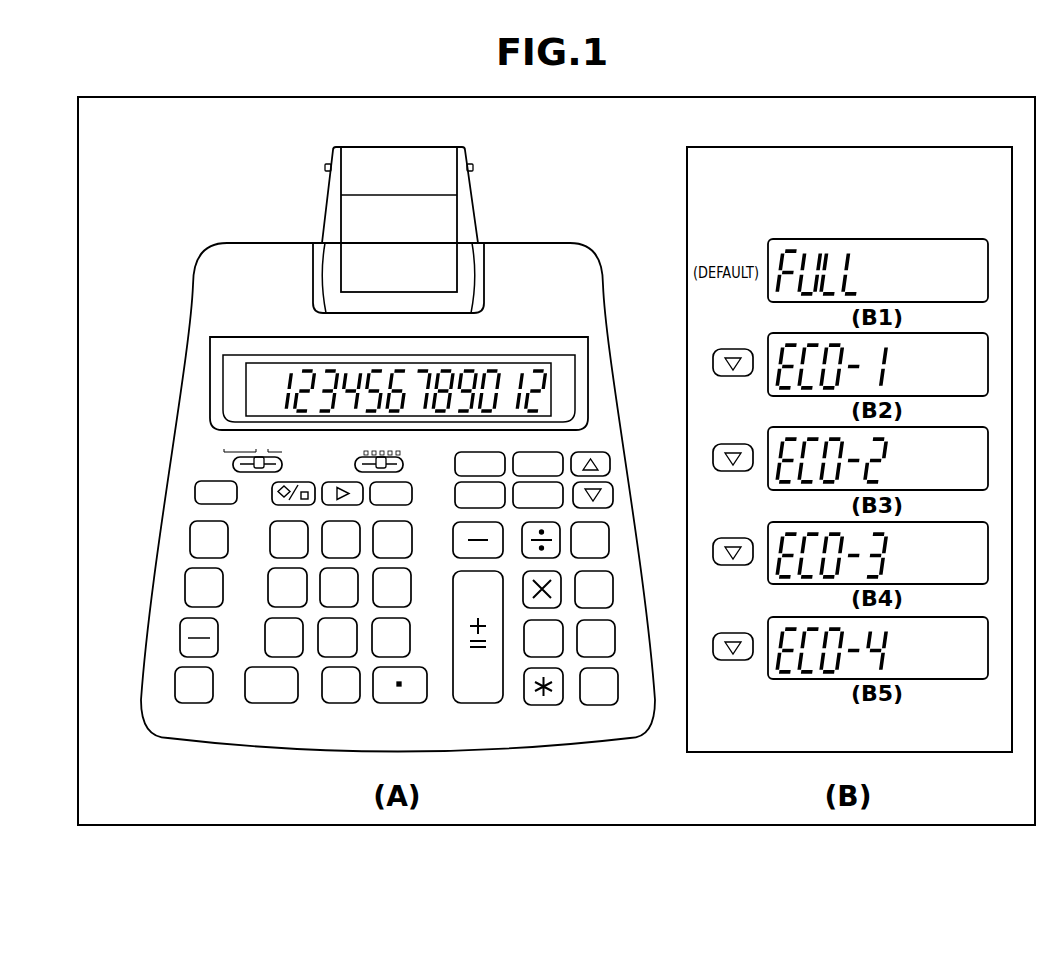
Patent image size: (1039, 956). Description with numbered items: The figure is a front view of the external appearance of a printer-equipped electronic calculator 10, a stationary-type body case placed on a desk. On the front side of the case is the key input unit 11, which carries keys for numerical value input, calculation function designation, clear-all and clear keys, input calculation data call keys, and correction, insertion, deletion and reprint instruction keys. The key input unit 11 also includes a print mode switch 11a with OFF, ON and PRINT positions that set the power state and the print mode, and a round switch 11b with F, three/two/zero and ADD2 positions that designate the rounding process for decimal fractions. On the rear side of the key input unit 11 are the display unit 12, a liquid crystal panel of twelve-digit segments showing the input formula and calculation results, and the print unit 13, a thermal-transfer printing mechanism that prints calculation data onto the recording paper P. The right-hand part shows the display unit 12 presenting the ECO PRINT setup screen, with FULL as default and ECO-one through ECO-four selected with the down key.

The printer-equipped electronic calculator 10 is at (253, 211).
The recording paper P is at (438, 158).
The print unit 13 is at (482, 273).
The display unit 12 is at (267, 392).
The print mode switch 11a is at (233, 463).
The round switch 11b is at (352, 462).
The key input unit 11 is at (293, 745).